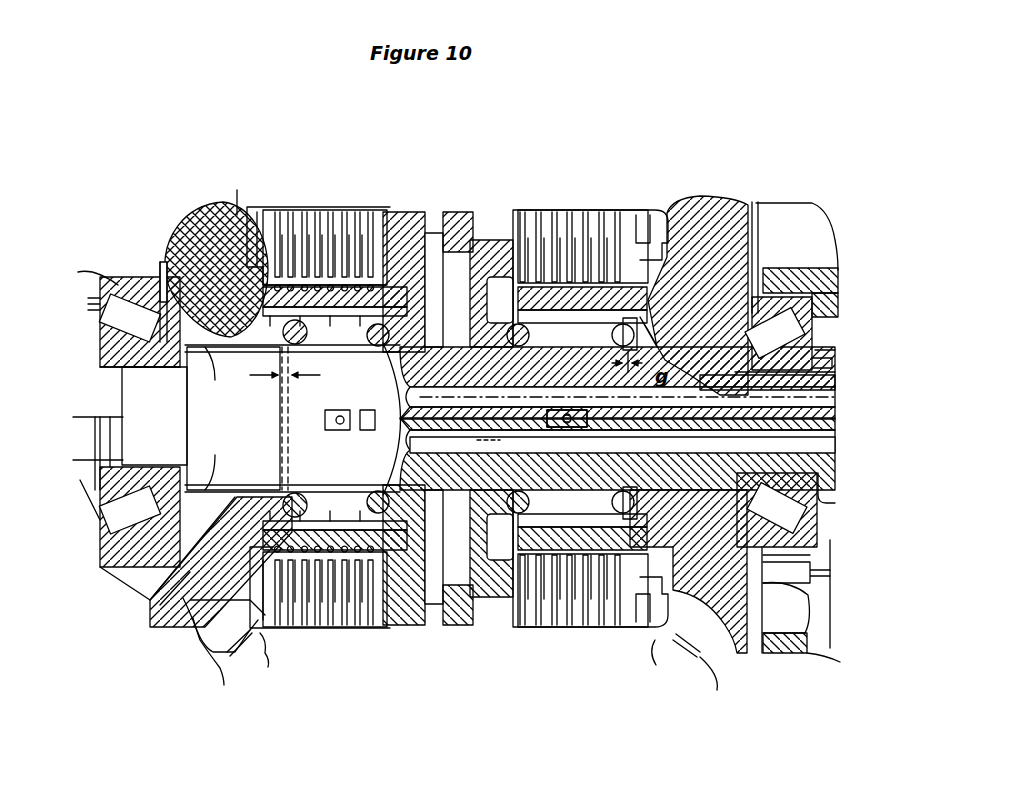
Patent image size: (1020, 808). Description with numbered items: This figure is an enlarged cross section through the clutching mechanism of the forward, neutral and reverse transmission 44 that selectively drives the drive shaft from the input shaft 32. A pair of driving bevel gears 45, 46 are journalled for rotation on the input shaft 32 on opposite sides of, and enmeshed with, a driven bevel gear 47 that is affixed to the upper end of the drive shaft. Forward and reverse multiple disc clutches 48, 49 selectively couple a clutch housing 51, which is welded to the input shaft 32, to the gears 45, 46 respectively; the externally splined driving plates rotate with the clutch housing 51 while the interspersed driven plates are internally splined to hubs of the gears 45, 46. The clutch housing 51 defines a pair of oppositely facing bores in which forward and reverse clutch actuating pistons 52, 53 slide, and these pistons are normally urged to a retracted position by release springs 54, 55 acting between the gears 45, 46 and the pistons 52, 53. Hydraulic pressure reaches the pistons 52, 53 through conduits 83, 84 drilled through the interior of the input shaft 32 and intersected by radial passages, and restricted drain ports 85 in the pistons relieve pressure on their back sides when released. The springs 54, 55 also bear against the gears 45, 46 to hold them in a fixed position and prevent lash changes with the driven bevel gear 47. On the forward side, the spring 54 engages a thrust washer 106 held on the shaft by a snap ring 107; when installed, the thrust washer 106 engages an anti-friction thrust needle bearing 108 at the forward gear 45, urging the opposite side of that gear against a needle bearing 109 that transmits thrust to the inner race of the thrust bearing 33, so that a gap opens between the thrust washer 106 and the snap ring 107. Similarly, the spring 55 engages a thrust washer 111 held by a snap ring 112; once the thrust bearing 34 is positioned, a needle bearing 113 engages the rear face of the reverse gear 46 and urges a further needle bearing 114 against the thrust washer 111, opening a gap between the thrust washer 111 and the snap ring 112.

The input shaft 32 is at (177, 577).
The thrust bearing 33 is at (120, 285).
The thrust bearing 34 is at (812, 297).
The forward, neutral and reverse transmission 44 is at (516, 168).
The forward driving bevel gear 45 is at (227, 190).
The reverse driving bevel gear 46 is at (710, 215).
The driven bevel gear 47 is at (232, 668).
The forward multiple disc clutch 48 is at (340, 183).
The reverse multiple disc clutch 49 is at (601, 168).
The clutch housing 51 is at (422, 212).
The forward clutch actuating piston 52 is at (393, 196).
The reverse clutch actuating piston 53 is at (495, 215).
The forward release spring 54 is at (310, 418).
The reverse release spring 55 is at (605, 350).
The conduit 83 is at (530, 350).
The conduit 84 is at (682, 443).
The restricted drain port 85 is at (458, 260).
The thrust washer 106 is at (220, 248).
The snap ring 107 is at (233, 418).
The anti-friction thrust needle bearing 108 is at (162, 262).
The needle bearing 109 is at (154, 416).
The thrust washer 111 is at (695, 270).
The snap ring 112 is at (660, 385).
The needle bearing 113 is at (640, 355).
The needle bearing 114 is at (648, 345).